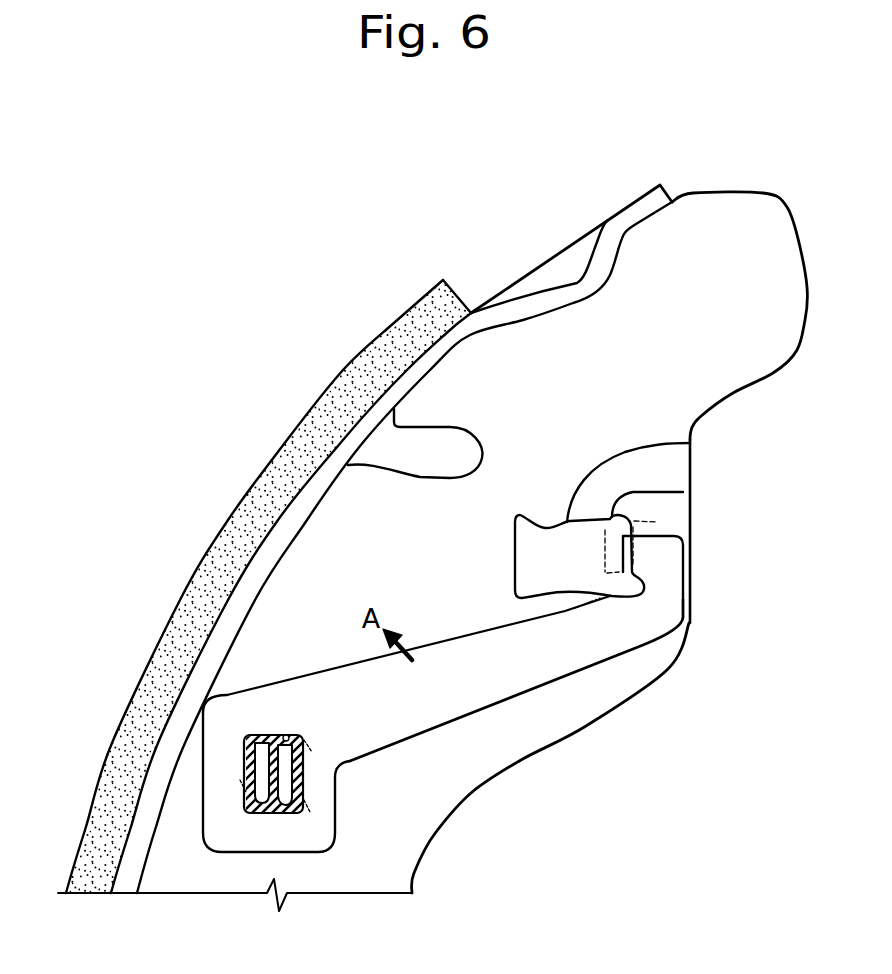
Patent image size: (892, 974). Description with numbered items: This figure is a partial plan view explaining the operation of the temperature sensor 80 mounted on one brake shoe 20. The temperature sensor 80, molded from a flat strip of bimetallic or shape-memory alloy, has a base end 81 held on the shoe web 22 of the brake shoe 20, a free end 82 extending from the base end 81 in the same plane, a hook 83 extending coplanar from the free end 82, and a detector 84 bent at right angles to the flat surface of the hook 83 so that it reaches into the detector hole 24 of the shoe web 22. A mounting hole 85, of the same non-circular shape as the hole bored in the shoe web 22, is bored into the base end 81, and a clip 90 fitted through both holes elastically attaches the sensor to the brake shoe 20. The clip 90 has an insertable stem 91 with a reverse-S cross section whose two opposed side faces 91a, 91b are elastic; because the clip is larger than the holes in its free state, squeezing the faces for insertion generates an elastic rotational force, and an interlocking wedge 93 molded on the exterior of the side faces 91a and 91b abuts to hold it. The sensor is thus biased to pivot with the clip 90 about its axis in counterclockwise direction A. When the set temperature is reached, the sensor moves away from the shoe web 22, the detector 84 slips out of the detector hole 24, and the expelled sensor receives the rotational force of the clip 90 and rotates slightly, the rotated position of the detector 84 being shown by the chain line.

The brake shoe 20 is at (255, 471).
The shoe web 22 is at (522, 738).
The detector hole 24 is at (690, 452).
The temperature sensor 80 is at (413, 743).
The base end 81 is at (307, 847).
The free end 82 is at (555, 667).
The hook 83 is at (657, 600).
The detector 84 is at (690, 493).
The mounting hole 85 is at (287, 735).
The clip 90 is at (279, 817).
The insertable stem 91 is at (297, 817).
The side face 91a is at (298, 782).
The side face 91b is at (250, 768).
The interlocking wedge 93 is at (310, 757).